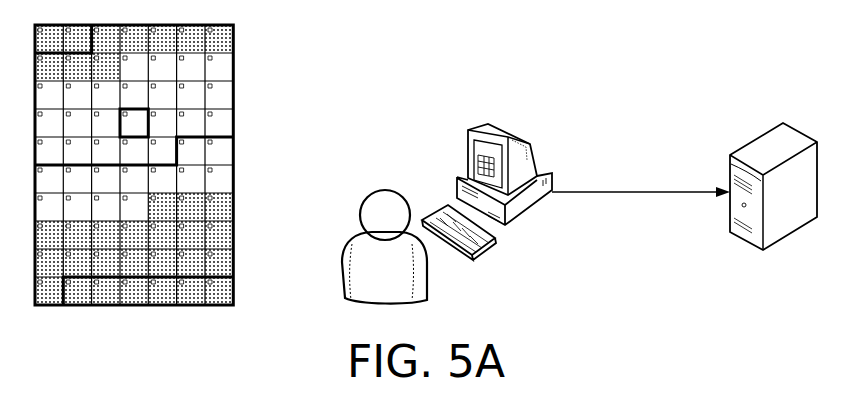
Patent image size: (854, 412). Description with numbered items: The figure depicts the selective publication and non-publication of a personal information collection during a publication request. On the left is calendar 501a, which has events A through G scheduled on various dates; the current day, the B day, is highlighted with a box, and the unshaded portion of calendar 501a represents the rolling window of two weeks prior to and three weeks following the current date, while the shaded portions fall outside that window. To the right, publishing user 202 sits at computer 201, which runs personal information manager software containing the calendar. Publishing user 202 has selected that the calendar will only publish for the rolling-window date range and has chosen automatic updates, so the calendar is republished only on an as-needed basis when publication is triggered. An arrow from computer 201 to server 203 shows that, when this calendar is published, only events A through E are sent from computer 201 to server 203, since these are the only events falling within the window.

The calendar 501a is at (275, 48).
The computer 201 is at (467, 173).
The publishing user 202 is at (357, 235).
The server 203 is at (757, 137).